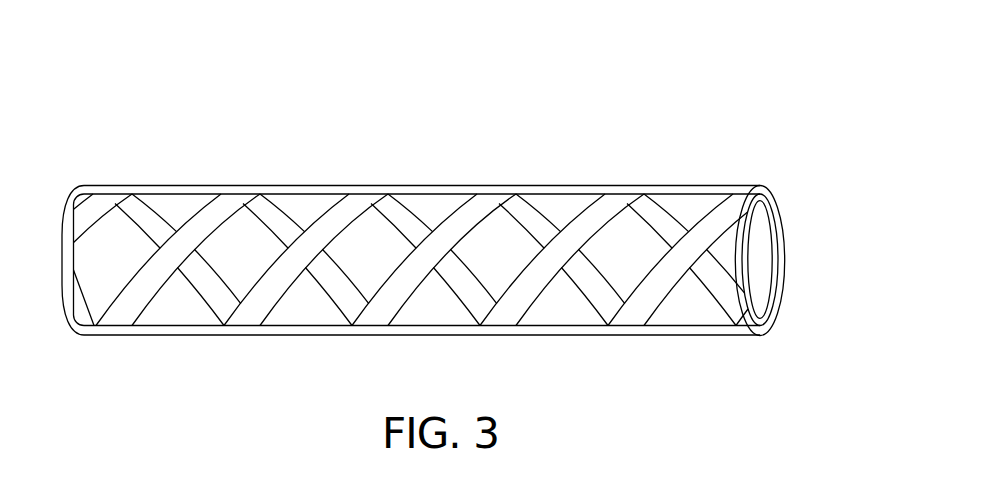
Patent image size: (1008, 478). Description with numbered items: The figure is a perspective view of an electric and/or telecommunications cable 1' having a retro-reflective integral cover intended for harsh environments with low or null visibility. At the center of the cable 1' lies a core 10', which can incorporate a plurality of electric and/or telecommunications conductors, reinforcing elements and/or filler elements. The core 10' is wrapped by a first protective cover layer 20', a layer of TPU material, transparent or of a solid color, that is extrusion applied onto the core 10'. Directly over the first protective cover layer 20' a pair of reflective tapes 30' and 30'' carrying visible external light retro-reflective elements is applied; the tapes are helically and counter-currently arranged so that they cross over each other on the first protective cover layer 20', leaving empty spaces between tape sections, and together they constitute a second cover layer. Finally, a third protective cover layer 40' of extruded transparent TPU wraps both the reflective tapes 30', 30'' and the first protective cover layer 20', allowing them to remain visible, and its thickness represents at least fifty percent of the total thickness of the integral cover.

The electric and/or telecommunications cable 1' is at (468, 215).
The core 10' is at (775, 305).
The first protective cover layer 20' is at (474, 260).
The reflective tape 30' is at (410, 206).
The reflective tape 30'' is at (409, 309).
The third protective cover layer 40' is at (423, 205).